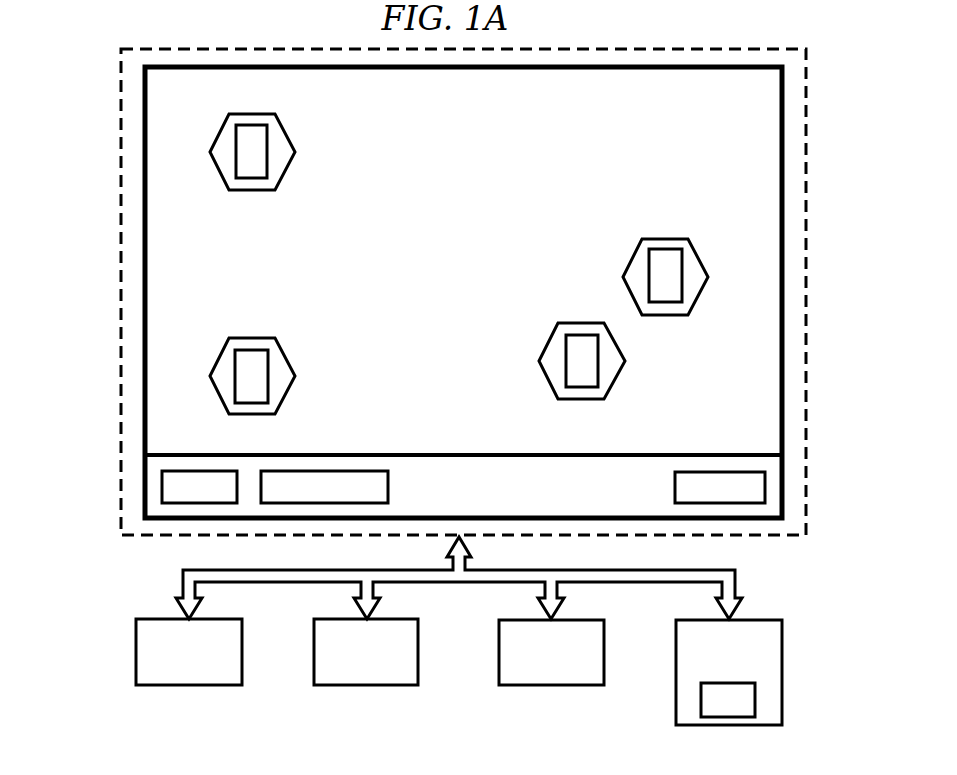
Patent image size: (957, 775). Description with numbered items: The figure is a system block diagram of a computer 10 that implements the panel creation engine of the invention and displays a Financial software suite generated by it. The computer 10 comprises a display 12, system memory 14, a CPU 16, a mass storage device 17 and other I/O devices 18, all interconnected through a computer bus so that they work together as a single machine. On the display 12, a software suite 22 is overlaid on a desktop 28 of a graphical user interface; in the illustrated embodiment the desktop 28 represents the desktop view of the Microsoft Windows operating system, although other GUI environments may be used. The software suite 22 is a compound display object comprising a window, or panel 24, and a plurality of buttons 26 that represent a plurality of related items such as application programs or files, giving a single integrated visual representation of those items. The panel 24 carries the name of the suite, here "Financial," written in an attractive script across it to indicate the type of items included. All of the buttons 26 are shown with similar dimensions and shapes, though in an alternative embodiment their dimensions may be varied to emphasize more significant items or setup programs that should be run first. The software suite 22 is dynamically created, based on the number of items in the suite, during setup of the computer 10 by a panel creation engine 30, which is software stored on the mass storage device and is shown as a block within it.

The computer 10 is at (80, 576).
The display 12 is at (813, 418).
The system memory 14 is at (135, 652).
The CPU 16 is at (313, 650).
The mass storage device 17 is at (605, 650).
The I/O devices 18 is at (783, 672).
The software suite 22 is at (798, 285).
The panel 24 is at (767, 202).
The buttons 26 is at (222, 132).
The desktop 28 is at (795, 352).
The panel creation engine 30 is at (756, 700).